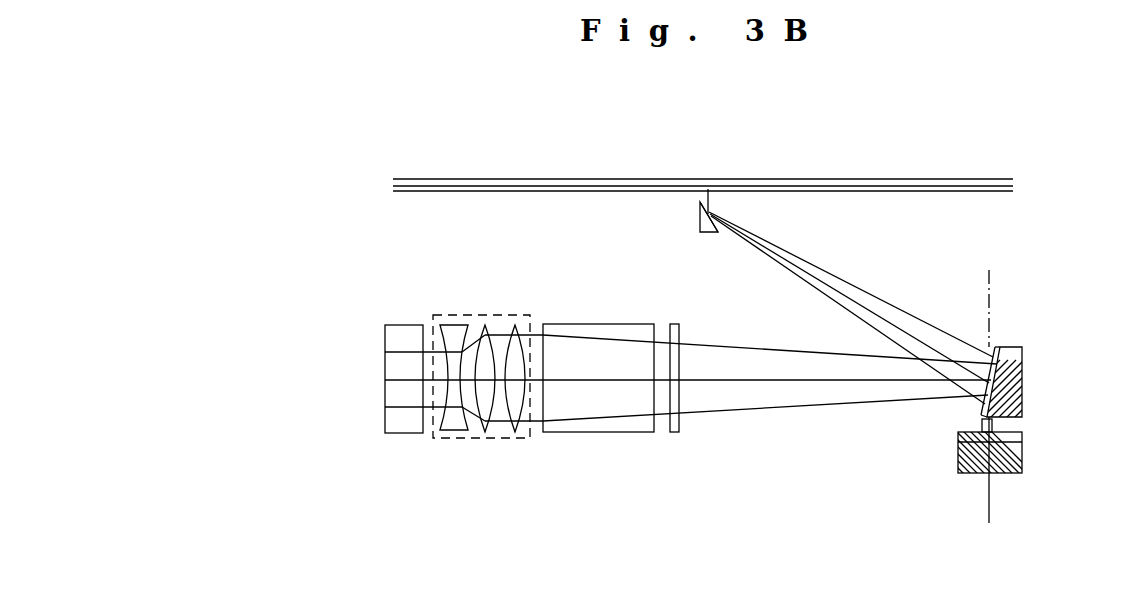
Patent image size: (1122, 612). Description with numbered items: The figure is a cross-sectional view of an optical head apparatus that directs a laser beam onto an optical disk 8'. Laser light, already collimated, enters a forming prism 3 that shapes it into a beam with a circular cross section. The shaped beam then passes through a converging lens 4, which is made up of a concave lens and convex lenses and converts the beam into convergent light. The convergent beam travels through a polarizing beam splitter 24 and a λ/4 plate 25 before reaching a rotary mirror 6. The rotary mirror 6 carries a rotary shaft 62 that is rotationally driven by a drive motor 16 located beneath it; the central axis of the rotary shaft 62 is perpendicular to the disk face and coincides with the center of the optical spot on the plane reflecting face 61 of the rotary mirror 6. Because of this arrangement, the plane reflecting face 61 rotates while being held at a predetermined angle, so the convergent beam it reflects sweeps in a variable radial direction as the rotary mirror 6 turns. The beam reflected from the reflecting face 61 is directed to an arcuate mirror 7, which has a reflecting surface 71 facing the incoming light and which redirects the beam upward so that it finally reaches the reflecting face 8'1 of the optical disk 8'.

The forming prism 3 is at (408, 433).
The converging lens 4 is at (505, 438).
The polarizing beam splitter 24 is at (605, 428).
The λ/4 plate 25 is at (677, 428).
The optical disk 8' is at (703, 147).
The reflecting face of the optical disk 8'1 is at (703, 219).
The arcuate mirror 7 is at (697, 226).
The reflecting surface of mirror 71 is at (723, 238).
The rotary mirror 6 is at (998, 342).
The plane reflecting face 61 is at (990, 357).
The rotary shaft 62 is at (996, 424).
The drive motor 16 is at (1015, 459).